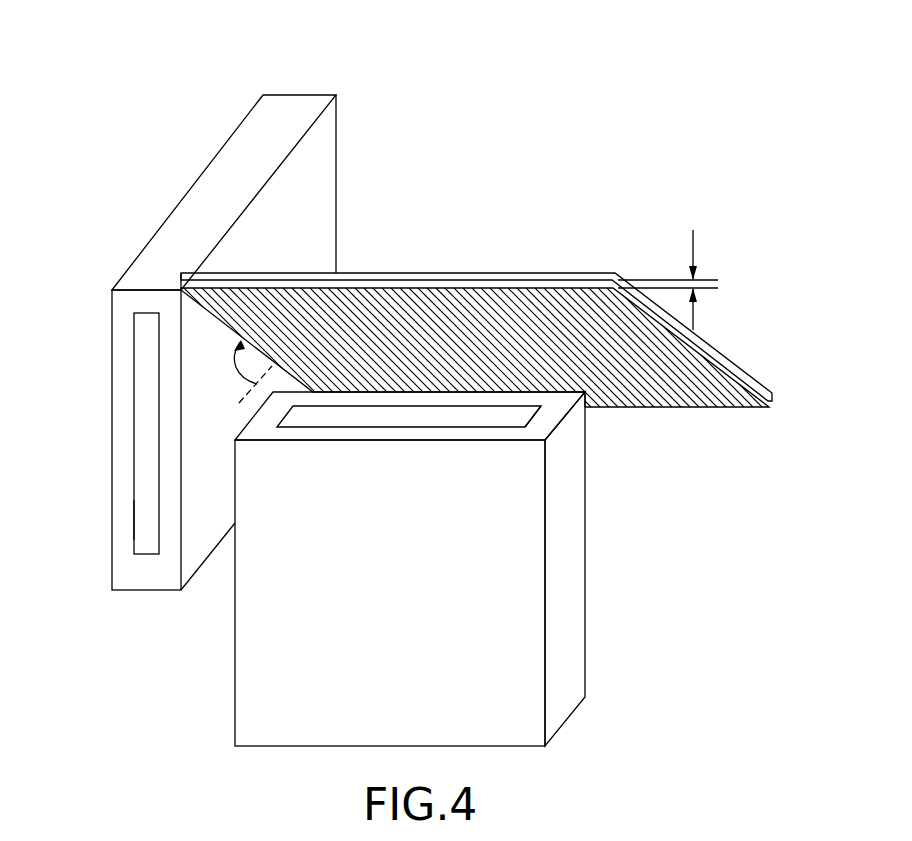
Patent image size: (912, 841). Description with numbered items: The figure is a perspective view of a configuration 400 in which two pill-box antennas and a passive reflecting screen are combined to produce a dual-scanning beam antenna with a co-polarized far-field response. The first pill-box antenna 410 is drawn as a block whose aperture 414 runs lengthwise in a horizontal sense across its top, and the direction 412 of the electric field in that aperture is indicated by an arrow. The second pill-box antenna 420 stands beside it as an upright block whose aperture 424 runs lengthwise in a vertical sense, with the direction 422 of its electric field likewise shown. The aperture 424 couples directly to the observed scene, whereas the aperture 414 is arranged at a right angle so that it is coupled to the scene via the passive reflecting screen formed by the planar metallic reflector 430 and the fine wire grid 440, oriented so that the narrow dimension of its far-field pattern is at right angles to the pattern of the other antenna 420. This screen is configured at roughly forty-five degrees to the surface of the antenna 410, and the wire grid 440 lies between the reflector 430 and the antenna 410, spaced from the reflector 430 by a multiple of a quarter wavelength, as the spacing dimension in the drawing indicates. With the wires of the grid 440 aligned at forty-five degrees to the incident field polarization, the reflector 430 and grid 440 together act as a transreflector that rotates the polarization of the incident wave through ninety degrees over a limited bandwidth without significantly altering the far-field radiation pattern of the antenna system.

The configuration 400 is at (486, 88).
The pill-box antenna 410 is at (306, 640).
The direction of the electric field 412 is at (417, 412).
The aperture 414 is at (533, 408).
The pill-box antenna 420 is at (195, 190).
The direction of the electric field 422 is at (152, 438).
The aperture 424 is at (148, 517).
The planar metallic reflector 430 is at (465, 265).
The wire grid 440 is at (694, 411).